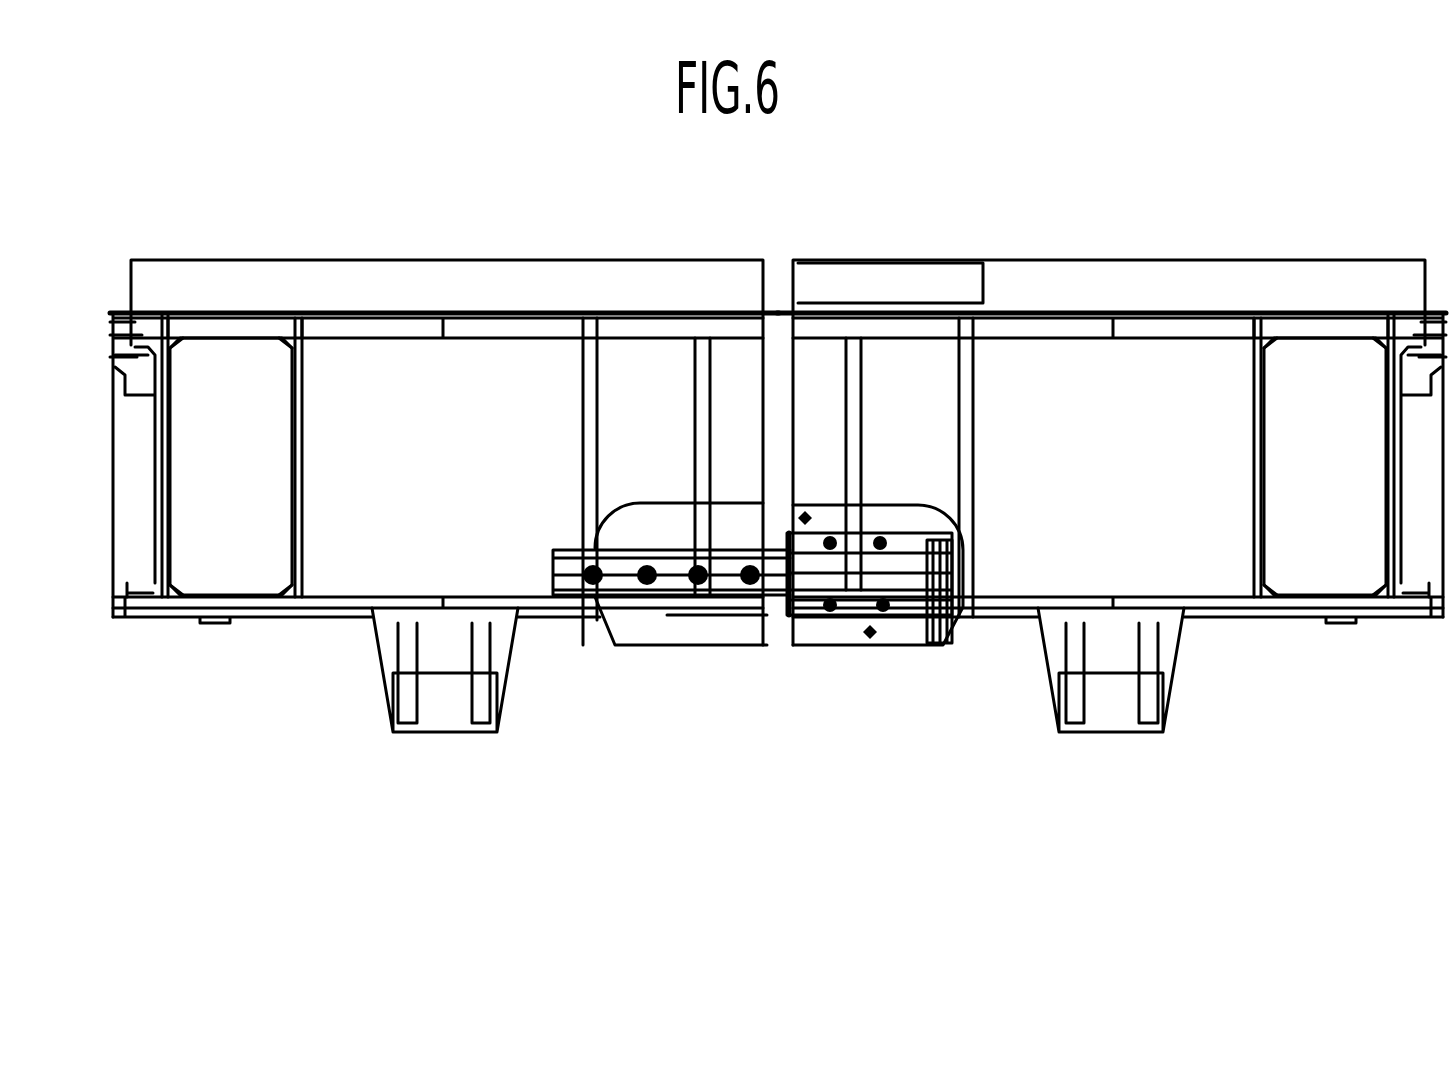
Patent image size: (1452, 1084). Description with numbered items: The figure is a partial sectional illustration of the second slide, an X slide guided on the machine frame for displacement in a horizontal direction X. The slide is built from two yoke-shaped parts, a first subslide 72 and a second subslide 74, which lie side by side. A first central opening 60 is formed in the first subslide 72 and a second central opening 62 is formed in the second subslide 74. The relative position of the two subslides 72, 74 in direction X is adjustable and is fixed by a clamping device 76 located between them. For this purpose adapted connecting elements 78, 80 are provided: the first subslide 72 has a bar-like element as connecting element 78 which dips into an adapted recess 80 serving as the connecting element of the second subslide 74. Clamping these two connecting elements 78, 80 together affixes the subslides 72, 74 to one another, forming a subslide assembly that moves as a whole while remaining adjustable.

The first central opening 60 is at (334, 548).
The second central opening 62 is at (1200, 547).
The first subslide 72 is at (410, 400).
The second subslide 74 is at (1190, 402).
The clamping device 76 is at (758, 658).
The connecting element 78 is at (713, 590).
The connecting element 80 is at (895, 583).